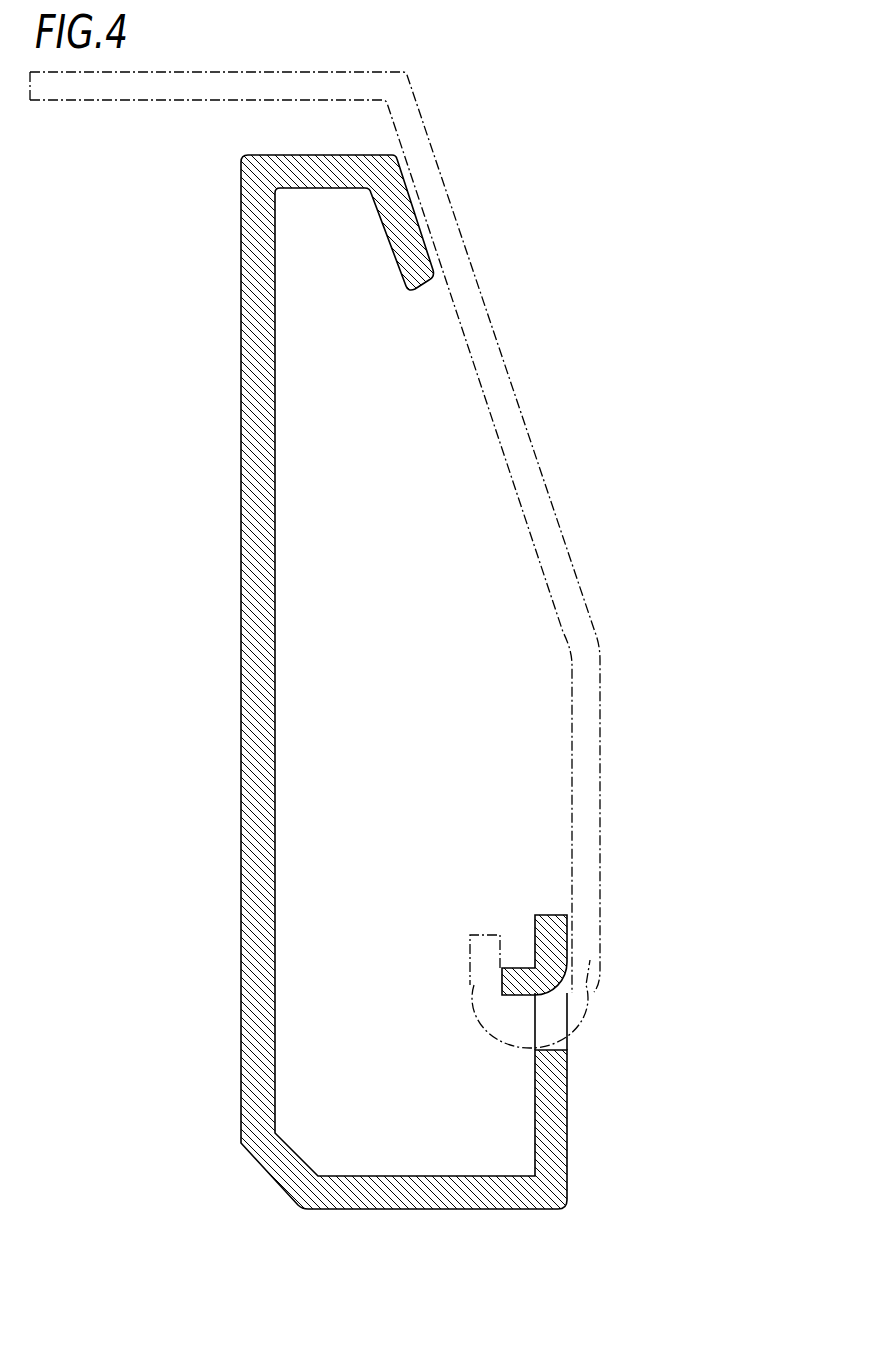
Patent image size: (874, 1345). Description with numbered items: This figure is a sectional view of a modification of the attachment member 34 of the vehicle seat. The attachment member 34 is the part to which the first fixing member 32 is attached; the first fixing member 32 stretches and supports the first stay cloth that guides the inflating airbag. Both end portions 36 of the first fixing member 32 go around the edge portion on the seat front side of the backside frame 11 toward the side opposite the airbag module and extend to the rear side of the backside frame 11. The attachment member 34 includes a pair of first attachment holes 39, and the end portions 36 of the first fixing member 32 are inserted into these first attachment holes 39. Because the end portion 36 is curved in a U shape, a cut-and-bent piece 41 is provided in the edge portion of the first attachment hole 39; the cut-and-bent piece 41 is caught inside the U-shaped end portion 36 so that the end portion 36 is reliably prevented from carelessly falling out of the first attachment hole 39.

The backside frame 11 is at (228, 503).
The first fixing member 32 is at (550, 498).
The attachment member 34 is at (565, 1088).
The end portion of the first fixing member 36 is at (497, 1025).
The first attachment hole 39 is at (548, 998).
The cut-and-bent piece 41 is at (523, 962).